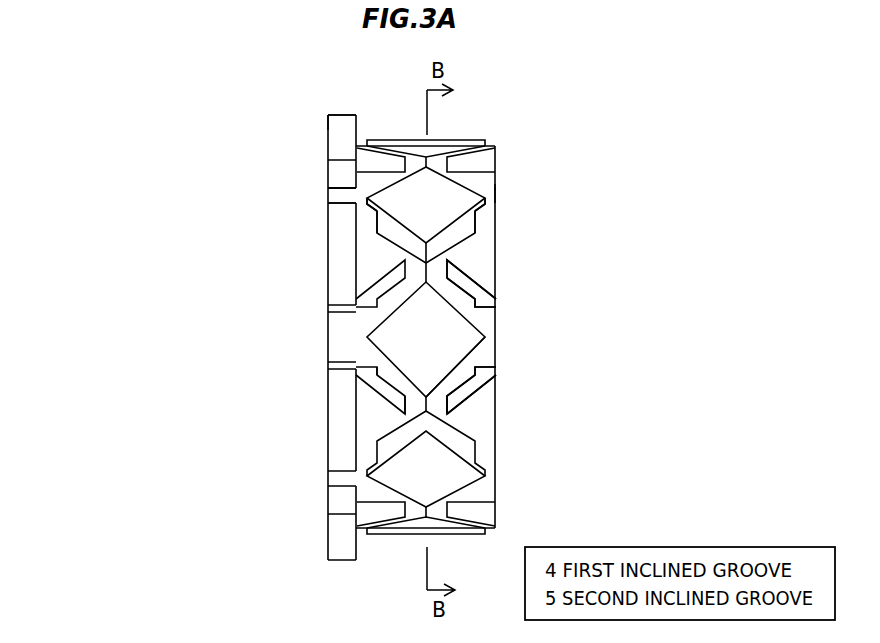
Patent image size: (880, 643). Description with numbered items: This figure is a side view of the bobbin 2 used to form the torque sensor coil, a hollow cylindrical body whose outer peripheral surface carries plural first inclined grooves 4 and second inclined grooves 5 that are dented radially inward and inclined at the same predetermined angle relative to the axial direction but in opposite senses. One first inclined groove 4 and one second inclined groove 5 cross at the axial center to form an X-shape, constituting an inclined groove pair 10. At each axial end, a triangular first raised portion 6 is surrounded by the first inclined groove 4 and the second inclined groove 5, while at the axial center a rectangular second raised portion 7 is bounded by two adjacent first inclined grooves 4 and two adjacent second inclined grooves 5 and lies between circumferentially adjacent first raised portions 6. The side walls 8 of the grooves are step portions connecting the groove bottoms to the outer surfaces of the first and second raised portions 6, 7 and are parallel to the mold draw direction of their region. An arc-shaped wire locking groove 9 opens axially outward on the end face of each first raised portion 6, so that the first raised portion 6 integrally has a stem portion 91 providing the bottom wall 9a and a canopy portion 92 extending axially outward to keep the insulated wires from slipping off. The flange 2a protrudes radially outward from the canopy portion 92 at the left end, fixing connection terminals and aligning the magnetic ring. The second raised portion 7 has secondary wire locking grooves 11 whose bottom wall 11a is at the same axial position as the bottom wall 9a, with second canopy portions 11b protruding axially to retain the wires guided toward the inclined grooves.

The bobbin 2 is at (339, 90).
The flange 2a is at (328, 116).
The first inclined groove 4 is at (468, 437).
The second inclined groove 5 is at (455, 387).
The first raised portion 6 is at (556, 290).
The second raised portion 7 is at (468, 345).
The side wall 8 is at (390, 443).
The wire locking groove 9 is at (570, 193).
The bottom wall 9a is at (355, 182).
The inclined groove pair 10 is at (548, 413).
The secondary wire locking groove 11 is at (565, 243).
The bottom wall 11a is at (366, 221).
The second canopy portion 11b is at (367, 198).
The stem portion 91 is at (491, 305).
The canopy portion 92 is at (492, 287).